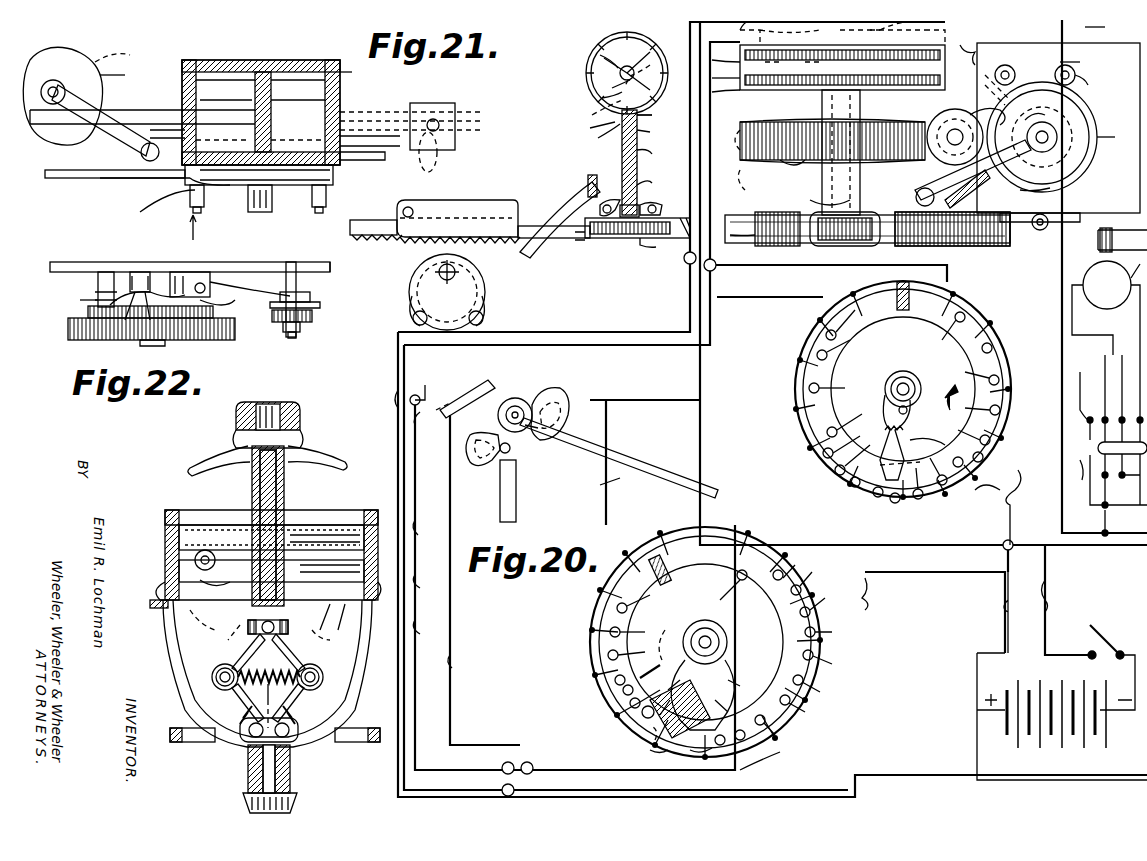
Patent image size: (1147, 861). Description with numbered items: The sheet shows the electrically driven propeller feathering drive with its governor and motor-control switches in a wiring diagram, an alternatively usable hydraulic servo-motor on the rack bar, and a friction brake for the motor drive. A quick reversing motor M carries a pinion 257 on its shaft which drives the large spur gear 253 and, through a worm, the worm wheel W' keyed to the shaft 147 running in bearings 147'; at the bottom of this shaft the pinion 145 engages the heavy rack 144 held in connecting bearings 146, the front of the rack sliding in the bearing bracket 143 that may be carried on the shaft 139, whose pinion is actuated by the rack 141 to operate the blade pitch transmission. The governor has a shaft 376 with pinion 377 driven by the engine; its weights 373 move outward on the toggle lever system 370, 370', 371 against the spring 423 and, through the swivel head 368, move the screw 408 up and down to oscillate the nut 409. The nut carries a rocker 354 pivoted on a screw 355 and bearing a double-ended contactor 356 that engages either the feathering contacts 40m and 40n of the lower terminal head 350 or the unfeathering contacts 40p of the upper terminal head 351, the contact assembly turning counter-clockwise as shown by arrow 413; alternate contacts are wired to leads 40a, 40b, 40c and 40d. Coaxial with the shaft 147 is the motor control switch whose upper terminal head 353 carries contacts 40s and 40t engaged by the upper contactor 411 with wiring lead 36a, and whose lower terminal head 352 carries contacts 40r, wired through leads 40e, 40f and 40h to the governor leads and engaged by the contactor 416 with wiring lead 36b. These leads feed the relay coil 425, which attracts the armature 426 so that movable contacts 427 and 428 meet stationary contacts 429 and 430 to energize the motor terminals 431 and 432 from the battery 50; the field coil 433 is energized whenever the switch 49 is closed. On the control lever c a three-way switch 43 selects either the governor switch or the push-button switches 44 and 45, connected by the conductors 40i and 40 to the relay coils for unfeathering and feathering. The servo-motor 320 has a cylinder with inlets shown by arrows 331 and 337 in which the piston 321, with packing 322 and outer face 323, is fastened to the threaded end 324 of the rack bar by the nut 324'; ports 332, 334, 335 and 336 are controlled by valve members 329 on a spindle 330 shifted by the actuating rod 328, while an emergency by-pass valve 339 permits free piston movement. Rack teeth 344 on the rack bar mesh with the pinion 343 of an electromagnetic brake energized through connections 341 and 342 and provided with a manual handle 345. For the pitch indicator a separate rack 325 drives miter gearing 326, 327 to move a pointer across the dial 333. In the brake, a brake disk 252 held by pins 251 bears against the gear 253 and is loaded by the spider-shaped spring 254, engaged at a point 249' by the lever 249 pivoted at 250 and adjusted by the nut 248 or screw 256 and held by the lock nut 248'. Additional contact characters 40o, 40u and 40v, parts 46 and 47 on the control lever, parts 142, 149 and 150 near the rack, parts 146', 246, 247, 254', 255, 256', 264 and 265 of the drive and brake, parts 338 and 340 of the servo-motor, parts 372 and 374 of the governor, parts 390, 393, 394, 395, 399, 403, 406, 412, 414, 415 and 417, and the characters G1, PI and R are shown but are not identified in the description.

In FIG. 20, the wiring lead 36a is at (965, 510).
In FIG. 20, the wiring lead 36b is at (1067, 281).
In FIG. 20, the conductor 40 is at (618, 452).
In FIG. 20, the electrical lead 40a is at (830, 584).
In FIG. 20, the electrical lead 40b is at (752, 595).
In FIG. 20, the electrical lead 40c is at (625, 703).
In FIG. 20, the electrical lead 40d is at (398, 385).
In FIG. 20, the wiring lead 40e is at (809, 390).
In FIG. 20, the wiring lead 40f is at (878, 375).
In FIG. 20, the wiring lead 40h is at (904, 208).
In FIG. 20, the conductor 40i is at (612, 488).
In FIG. 22, the feathering contact 40m is at (335, 617).
In FIG. 20, the feathering contact 40m is at (800, 722).
In FIG. 22, the feathering contact 40n is at (318, 639).
In FIG. 20, the feathering contact 40n is at (822, 671).
In FIG. 22, the wire 40o is at (325, 545).
In FIG. 20, the wire 40o is at (610, 632).
In FIG. 22, the unfeathering contact 40p is at (300, 530).
In FIG. 20, the unfeathering contact 40p is at (608, 655).
In FIG. 20, the contact 40r is at (843, 18).
In FIG. 20, the contact 40s is at (993, 345).
In FIG. 20, the contact 40t is at (1000, 375).
In FIG. 20, the wire 40u is at (826, 335).
In FIG. 20, the wire 40v is at (765, 365).
In FIG. 20, the three-way switch 43 is at (466, 396).
In FIG. 20, the push button switch 44 is at (490, 425).
In FIG. 20, the push button switch 45 is at (540, 420).
In FIG. 20, the disk 46 is at (518, 398).
In FIG. 20, the cam lobe 47 is at (558, 392).
In FIG. 20, the switch 49 is at (1105, 637).
In FIG. 20, the battery 50 is at (1080, 748).
In FIG. 21, the shaft 139 is at (447, 292).
In FIG. 21, the rack bar 141 is at (133, 108).
In FIG. 20, the rack bar 141 is at (742, 232).
In FIG. 21, the rod 142 is at (388, 238).
In FIG. 21, the bearing bracket 143 is at (560, 213).
In FIG. 20, the heavy rack 144 is at (980, 246).
In FIG. 20, the pinion 145 is at (840, 246).
In FIG. 20, the connecting bearings 146 is at (867, 238).
In FIG. 20, the gear 146' is at (817, 201).
In FIG. 20, the shaft 147 is at (827, 152).
In FIG. 20, the bearings 147' is at (832, 133).
In FIG. 21, the rack 149 is at (433, 202).
In FIG. 21, the pin 150 is at (430, 274).
In FIG. 21, the motor frame 246 is at (55, 270).
In FIG. 20, the motor frame 246 is at (1050, 54).
In FIG. 20, the screw 247 is at (1095, 77).
In FIG. 21, the adjusting nut 248 is at (315, 315).
In FIG. 20, the adjusting nut 248 is at (1084, 59).
In FIG. 21, the lock nut 248' is at (329, 329).
In FIG. 21, the lever 249 is at (232, 316).
In FIG. 20, the lever 249 is at (955, 125).
In FIG. 21, the spring engagement point 249' is at (128, 347).
In FIG. 21, the pivot 250 is at (250, 292).
In FIG. 20, the pivot 250 is at (990, 72).
In FIG. 21, the pins 251 is at (198, 266).
In FIG. 21, the brake disk 252 is at (88, 316).
In FIG. 21, the spur gear 253 is at (75, 340).
In FIG. 21, the spider-shaped spring 254 is at (148, 257).
In FIG. 21, the bracket arm 254' is at (127, 281).
In FIG. 21, the bearing 255 is at (230, 272).
In FIG. 21, the screw 256 is at (309, 299).
In FIG. 21, the collar 256' is at (318, 297).
In FIG. 20, the pinion 257 is at (1040, 109).
In FIG. 20, the lever 264 is at (940, 180).
In FIG. 20, the pawl 265 is at (967, 189).
In FIG. 21, the servo-motor 320 is at (213, 60).
In FIG. 21, the piston 321 is at (664, 208).
In FIG. 21, the packing 322 is at (260, 72).
In FIG. 21, the outer face of piston 323 is at (476, 112).
In FIG. 21, the threaded end 324 is at (298, 97).
In FIG. 21, the nut 324' is at (428, 170).
In FIG. 21, the separate rack 325 is at (340, 50).
In FIG. 21, the miter gearing 326 is at (332, 80).
In FIG. 21, the miter gearing 327 is at (360, 108).
In FIG. 21, the actuating rod 328 is at (125, 170).
In FIG. 21, the valve members 329 is at (588, 54).
In FIG. 21, the spindle 330 is at (304, 133).
In FIG. 20, the spindle 330 is at (719, 642).
In FIG. 21, the inlet arrow 331 is at (320, 222).
In FIG. 21, the inlet port 332 is at (340, 162).
In FIG. 21, the dial 333 is at (511, 124).
In FIG. 21, the outlet port 334 is at (230, 138).
In FIG. 21, the inlet port 335 is at (190, 182).
In FIG. 21, the drain port 336 is at (259, 175).
In FIG. 21, the inlet arrow 337 is at (194, 228).
In FIG. 21, the outlet 338 is at (266, 228).
In FIG. 21, the emergency by-pass valve 339 is at (448, 132).
In FIG. 21, the bar 340 is at (62, 170).
In FIG. 21, the brake connection 341 is at (118, 60).
In FIG. 21, the brake connection 342 is at (126, 72).
In FIG. 21, the pinion 343 is at (62, 96).
In FIG. 21, the rack teeth 344 is at (105, 112).
In FIG. 21, the manually operable handle 345 is at (160, 129).
In FIG. 22, the lower terminal head 350 is at (165, 535).
In FIG. 20, the lower terminal head 350 is at (630, 722).
In FIG. 22, the upper terminal head 351 is at (195, 525).
In FIG. 20, the upper terminal head 351 is at (610, 650).
In FIG. 20, the lower terminal head 352 is at (855, 292).
In FIG. 20, the upper terminal head 353 is at (1036, 390).
In FIG. 22, the rocker 354 is at (194, 617).
In FIG. 20, the rocker 354 is at (645, 738).
In FIG. 22, the screw 355 is at (165, 598).
In FIG. 20, the screw 355 is at (655, 760).
In FIG. 22, the double ended contactor 356 is at (222, 552).
In FIG. 20, the double ended contactor 356 is at (688, 760).
In FIG. 22, the swivel head 368 is at (269, 668).
In FIG. 22, the toggle lever 370 is at (309, 653).
In FIG. 22, the toggle lever 370' is at (224, 653).
In FIG. 22, the toggle lever 371 is at (244, 720).
In FIG. 22, the roller 372 is at (212, 676).
In FIG. 22, the weights 373 is at (242, 698).
In FIG. 22, the pin 374 is at (269, 712).
In FIG. 22, the governor shaft 376 is at (290, 782).
In FIG. 22, the pinion 377 is at (244, 803).
In FIG. 20, the wire 390 is at (720, 77).
In FIG. 21, the dial 393 is at (627, 32).
In FIG. 22, the cap 394 is at (272, 402).
In FIG. 20, the cap 394 is at (685, 612).
In FIG. 22, the collar 395 is at (236, 410).
In FIG. 22, the casing 399 is at (172, 612).
In FIG. 20, the switch bank 403 is at (810, 18).
In FIG. 22, the foot 406 is at (193, 726).
In FIG. 22, the screw 408 is at (284, 452).
In FIG. 22, the nut 409 is at (248, 634).
In FIG. 20, the nut 409 is at (1000, 450).
In FIG. 20, the upper contactor 411 is at (885, 385).
In FIG. 20, the contact arm 412 is at (884, 410).
In FIG. 20, the arrow 413 is at (736, 655).
In FIG. 20, the contact 414 is at (900, 495).
In FIG. 20, the contact 415 is at (836, 472).
In FIG. 20, the contactor 416 is at (900, 436).
In FIG. 20, the rotary switch 417 is at (930, 372).
In FIG. 22, the connecting spring 423 is at (277, 689).
In FIG. 20, the relay coil 425 is at (1081, 470).
In FIG. 20, the relay armature 426 is at (1107, 478).
In FIG. 20, the movable relay contact 427 is at (1119, 389).
In FIG. 20, the movable relay contact 428 is at (1133, 389).
In FIG. 20, the stationary relay contact 429 is at (1079, 391).
In FIG. 20, the stationary relay contact 430 is at (1122, 462).
In FIG. 20, the motor terminal 431 is at (1078, 280).
In FIG. 20, the motor terminal 432 is at (1138, 263).
In FIG. 20, the field coil 433 is at (1112, 240).
In FIG. 22, the governor G1 is at (330, 455).
In FIG. 20, the quick reversing motor M is at (1109, 139).
In FIG. 21, the pointer PI is at (640, 78).
In FIG. 21, the rack R is at (690, 238).
In FIG. 20, the worm wheel W' is at (786, 167).
In FIG. 20, the control lever c is at (516, 484).